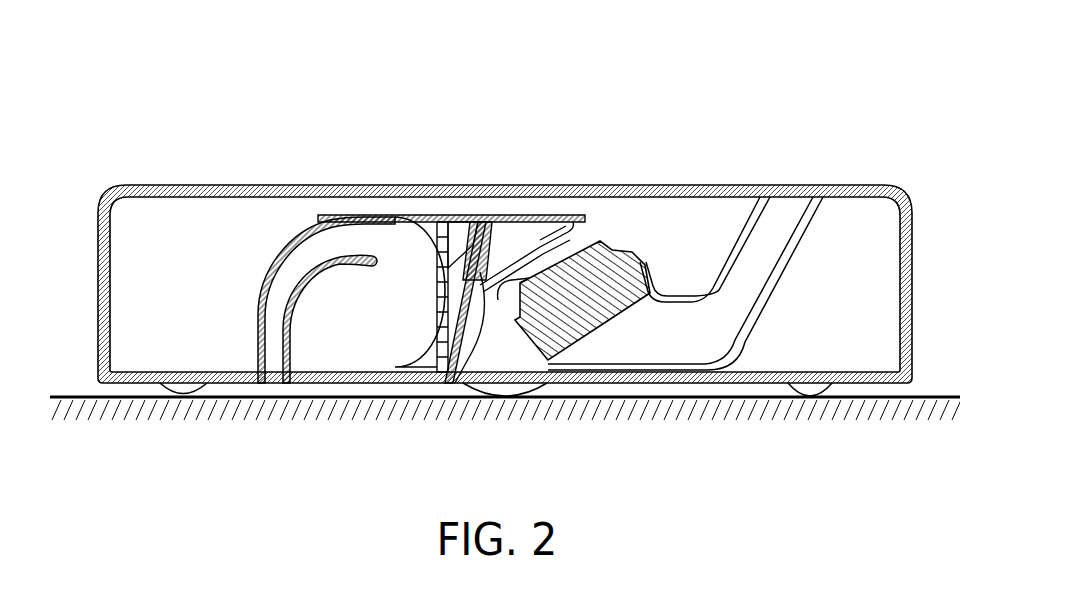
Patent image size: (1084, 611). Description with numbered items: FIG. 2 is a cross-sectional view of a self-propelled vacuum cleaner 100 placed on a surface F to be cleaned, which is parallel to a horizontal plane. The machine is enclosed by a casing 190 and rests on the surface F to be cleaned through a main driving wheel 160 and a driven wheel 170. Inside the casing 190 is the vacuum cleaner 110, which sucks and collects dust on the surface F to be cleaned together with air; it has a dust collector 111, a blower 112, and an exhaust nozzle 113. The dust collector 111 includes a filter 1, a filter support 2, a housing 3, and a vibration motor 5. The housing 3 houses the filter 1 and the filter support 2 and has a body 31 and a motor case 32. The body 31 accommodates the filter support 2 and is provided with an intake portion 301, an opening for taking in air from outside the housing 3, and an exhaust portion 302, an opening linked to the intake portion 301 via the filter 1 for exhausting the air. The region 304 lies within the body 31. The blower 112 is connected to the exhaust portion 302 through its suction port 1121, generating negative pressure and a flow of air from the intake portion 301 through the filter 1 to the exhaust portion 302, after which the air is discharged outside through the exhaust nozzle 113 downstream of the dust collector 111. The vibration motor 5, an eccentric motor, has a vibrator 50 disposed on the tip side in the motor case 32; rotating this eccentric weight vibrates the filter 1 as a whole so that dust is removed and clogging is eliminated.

The self-propelled vacuum cleaner 100 is at (477, 252).
The casing 190 is at (207, 188).
The driven wheel 170 is at (182, 388).
The main driving wheel 160 is at (505, 393).
The surface to be cleaned F is at (72, 390).
The body 31 is at (351, 313).
The intake portion 301 is at (271, 374).
The cavity 304 is at (350, 338).
The motor case 32 is at (477, 290).
The vacuum cleaner 110 is at (755, 66).
The dust collector 111 is at (337, 119).
The housing 3 is at (322, 218).
The filter 1 is at (445, 248).
The filter support 2 is at (444, 240).
The vibration motor 5 is at (480, 225).
The vibrator 50 is at (516, 284).
The exhaust portion 302 is at (545, 252).
The blower 112 is at (583, 276).
The suction port 1121 is at (527, 283).
The exhaust nozzle 113 is at (740, 236).